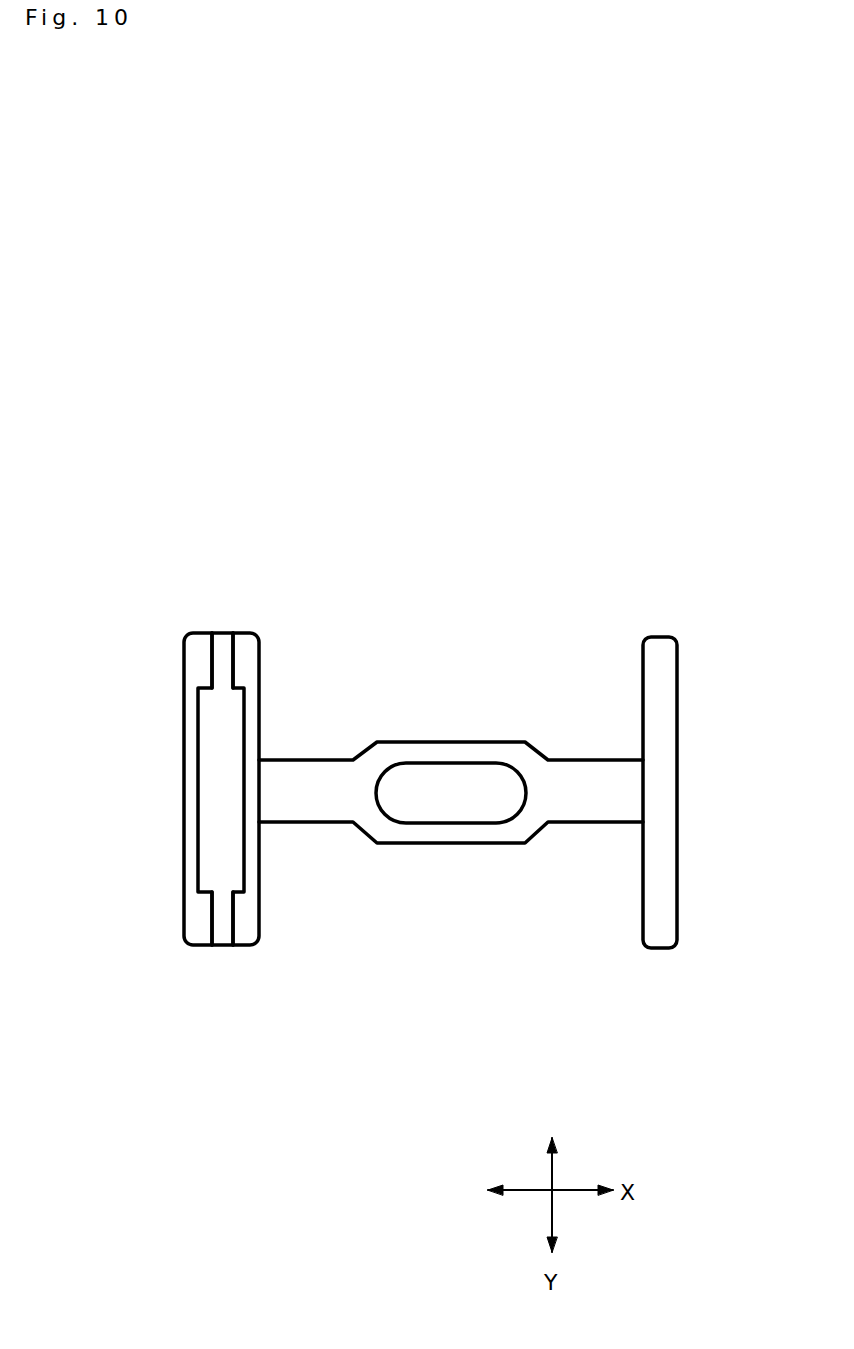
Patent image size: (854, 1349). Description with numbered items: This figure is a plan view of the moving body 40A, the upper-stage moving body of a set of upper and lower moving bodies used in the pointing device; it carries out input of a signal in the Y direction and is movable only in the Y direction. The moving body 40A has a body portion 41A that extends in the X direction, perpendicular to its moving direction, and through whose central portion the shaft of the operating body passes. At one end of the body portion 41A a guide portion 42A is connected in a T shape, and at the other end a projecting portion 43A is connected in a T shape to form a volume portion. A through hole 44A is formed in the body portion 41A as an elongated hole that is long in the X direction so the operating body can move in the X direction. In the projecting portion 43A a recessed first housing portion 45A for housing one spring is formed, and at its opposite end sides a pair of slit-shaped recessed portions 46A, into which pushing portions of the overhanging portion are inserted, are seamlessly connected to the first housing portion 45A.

The moving body 40A is at (439, 781).
The body portion 41A is at (455, 742).
The guide portion 42A is at (677, 882).
The projecting portion 43A is at (259, 905).
The through hole 44A is at (477, 810).
The first housing portion 45A is at (213, 748).
The recessed portions 46A is at (222, 640).